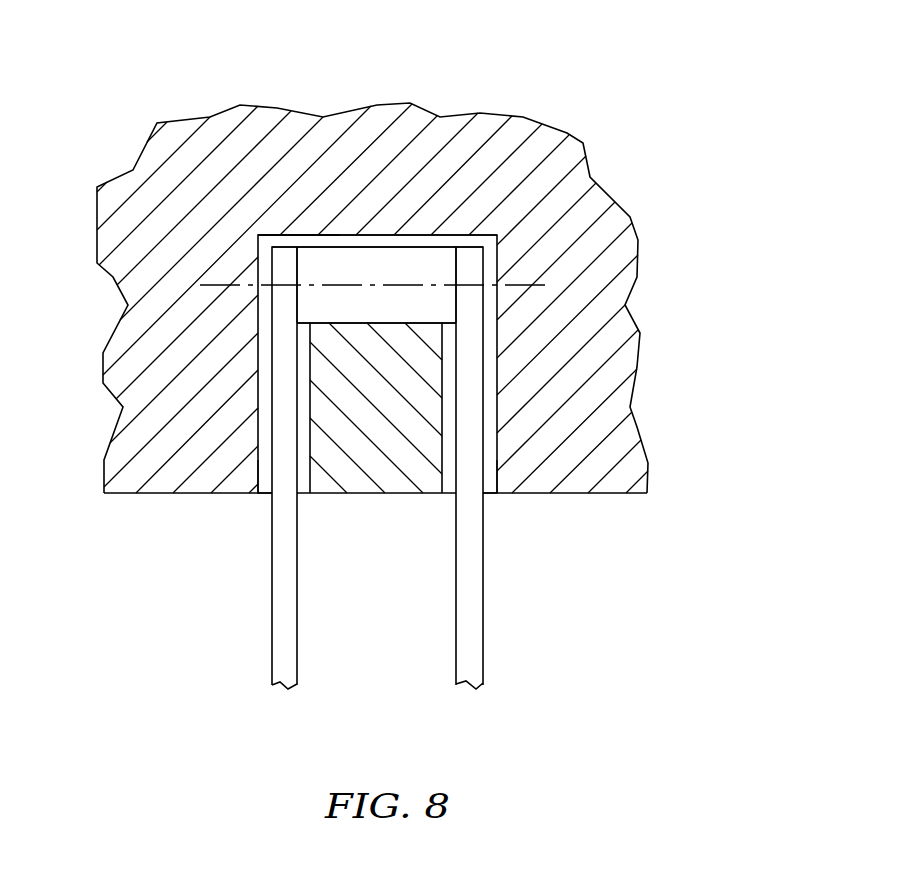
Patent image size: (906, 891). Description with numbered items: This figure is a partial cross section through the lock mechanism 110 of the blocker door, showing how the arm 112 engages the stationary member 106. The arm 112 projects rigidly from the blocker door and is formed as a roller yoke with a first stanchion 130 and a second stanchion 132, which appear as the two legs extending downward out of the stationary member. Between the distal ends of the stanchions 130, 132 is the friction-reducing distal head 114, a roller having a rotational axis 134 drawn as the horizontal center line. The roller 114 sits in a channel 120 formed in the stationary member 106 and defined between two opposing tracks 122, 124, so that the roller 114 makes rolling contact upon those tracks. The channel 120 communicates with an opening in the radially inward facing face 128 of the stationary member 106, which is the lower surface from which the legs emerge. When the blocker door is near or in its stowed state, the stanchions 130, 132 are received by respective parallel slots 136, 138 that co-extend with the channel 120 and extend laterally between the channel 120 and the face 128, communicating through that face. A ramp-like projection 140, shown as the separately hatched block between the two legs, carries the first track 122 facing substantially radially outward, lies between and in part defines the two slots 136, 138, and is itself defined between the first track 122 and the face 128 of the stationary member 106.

The stationary member 106 is at (570, 133).
The lock mechanism 110 is at (674, 159).
The arm 112 is at (245, 591).
The distal head 114 is at (388, 267).
The channel 120 is at (355, 237).
The first track 122 is at (405, 323).
The second track 124 is at (337, 241).
The face 128 is at (580, 494).
The first stanchion 130 is at (287, 613).
The second stanchion 132 is at (477, 602).
The rotational axis 134 is at (535, 283).
The first slot 136 is at (265, 494).
The second slot 138 is at (490, 494).
The ramp-like projection 140 is at (358, 466).